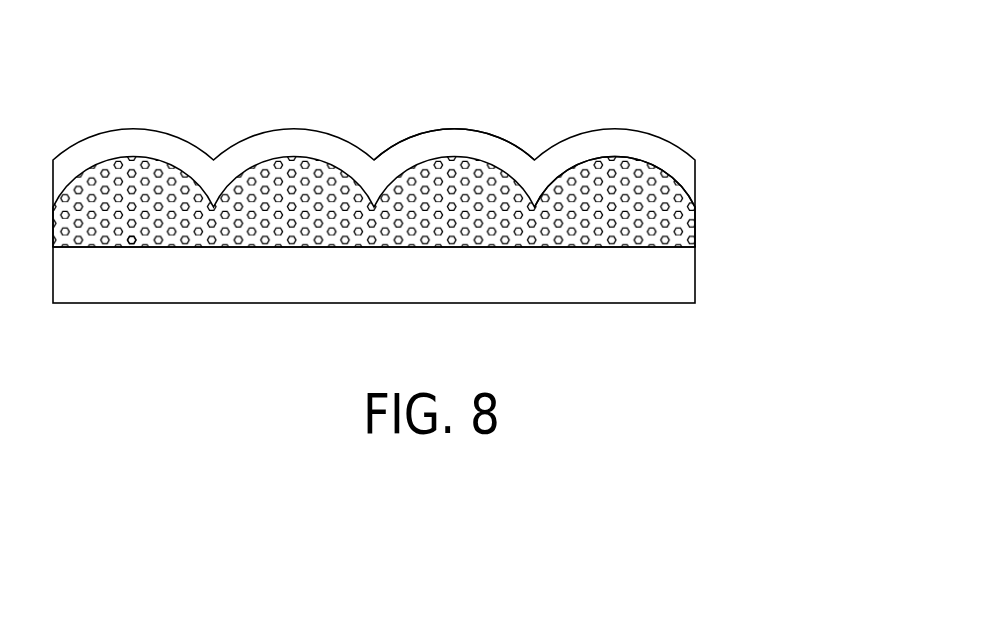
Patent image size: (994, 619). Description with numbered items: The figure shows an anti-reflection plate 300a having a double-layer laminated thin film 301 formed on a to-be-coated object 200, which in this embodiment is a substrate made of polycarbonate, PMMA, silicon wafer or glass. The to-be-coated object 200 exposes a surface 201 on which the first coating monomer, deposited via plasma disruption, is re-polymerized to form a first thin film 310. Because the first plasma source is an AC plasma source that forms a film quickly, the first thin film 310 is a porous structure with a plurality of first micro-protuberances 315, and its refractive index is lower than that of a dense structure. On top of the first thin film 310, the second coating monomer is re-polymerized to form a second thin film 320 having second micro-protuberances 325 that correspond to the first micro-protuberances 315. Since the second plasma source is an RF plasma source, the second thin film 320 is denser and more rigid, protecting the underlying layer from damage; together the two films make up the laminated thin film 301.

The anti-reflection plate 300a is at (880, 40).
The to-be-coated object 200 is at (697, 272).
The surface 201 is at (134, 231).
The laminated thin film 301 is at (805, 168).
The first thin film 310 is at (697, 229).
The first micro-protuberances 315 is at (611, 158).
The second thin film 320 is at (697, 180).
The second micro-protuberances 325 is at (543, 157).